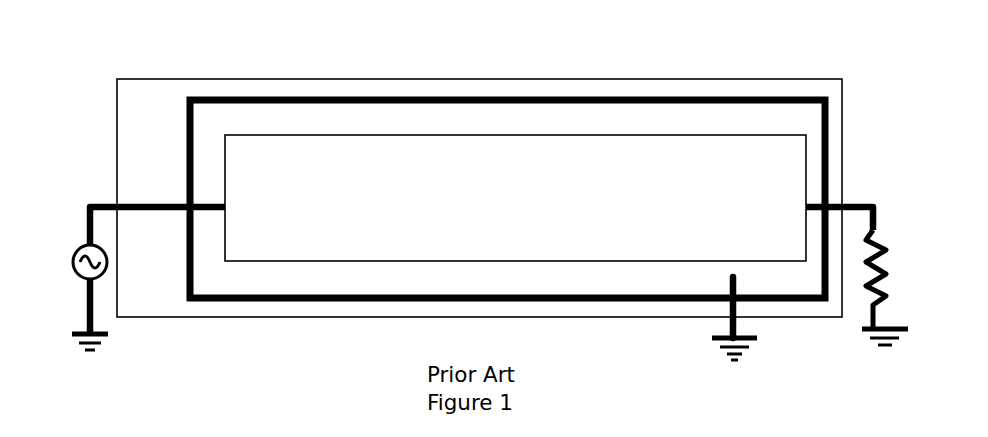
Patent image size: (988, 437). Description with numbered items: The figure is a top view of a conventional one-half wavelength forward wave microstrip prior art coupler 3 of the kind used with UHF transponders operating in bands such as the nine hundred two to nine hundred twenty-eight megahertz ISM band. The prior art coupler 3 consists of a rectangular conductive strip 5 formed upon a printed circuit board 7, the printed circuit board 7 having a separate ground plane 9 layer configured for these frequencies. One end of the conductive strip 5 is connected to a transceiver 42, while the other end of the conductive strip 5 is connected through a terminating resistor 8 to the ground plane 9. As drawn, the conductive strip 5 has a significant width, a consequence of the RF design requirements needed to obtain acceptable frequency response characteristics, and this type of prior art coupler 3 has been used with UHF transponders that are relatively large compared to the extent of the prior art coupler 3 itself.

The prior art coupler 3 is at (298, 68).
The conductive strip 5 is at (473, 160).
The printed circuit board 7 is at (845, 93).
The terminating resistor 8 is at (862, 276).
The ground plane 9 is at (515, 134).
The transceiver 42 is at (72, 242).